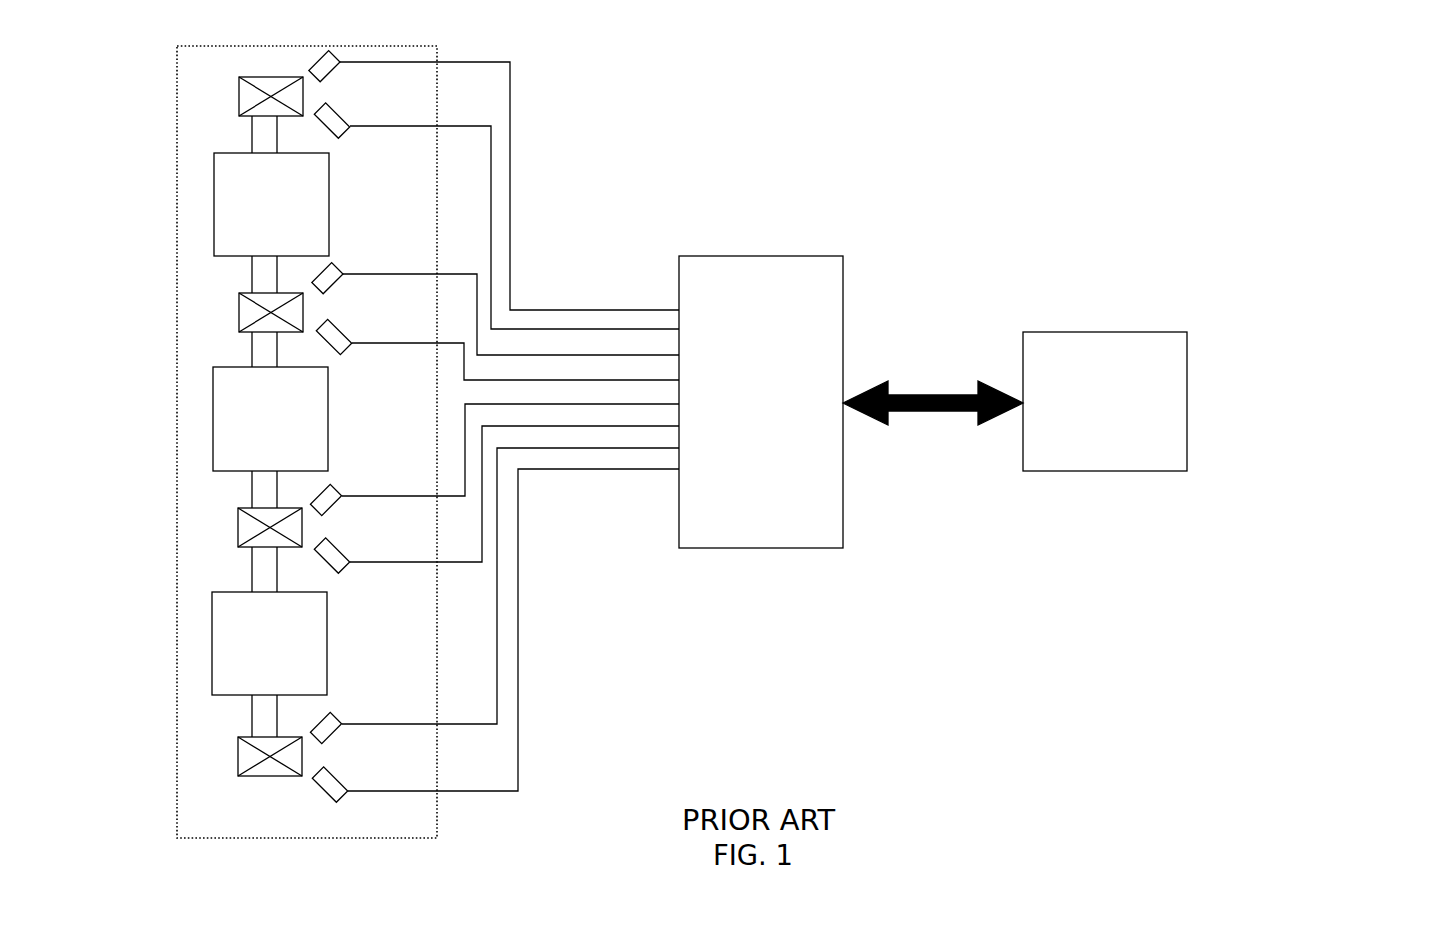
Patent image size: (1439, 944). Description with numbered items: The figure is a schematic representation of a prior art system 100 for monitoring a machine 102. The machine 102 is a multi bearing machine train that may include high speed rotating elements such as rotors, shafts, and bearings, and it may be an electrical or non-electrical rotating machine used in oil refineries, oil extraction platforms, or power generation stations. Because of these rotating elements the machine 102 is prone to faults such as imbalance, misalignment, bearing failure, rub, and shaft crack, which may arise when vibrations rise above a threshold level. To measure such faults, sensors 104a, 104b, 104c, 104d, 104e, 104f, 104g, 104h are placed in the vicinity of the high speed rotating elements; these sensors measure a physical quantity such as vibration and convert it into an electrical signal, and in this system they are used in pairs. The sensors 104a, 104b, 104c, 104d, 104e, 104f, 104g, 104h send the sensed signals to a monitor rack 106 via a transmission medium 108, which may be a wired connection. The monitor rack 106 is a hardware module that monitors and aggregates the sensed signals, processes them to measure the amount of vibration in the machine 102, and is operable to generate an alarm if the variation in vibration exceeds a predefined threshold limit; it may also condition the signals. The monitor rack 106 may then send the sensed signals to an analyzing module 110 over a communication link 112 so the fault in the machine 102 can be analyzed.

The prior art system 100 is at (1348, 107).
The machine 102 is at (177, 443).
The sensor 104a is at (331, 72).
The sensor 104b is at (334, 132).
The sensor 104c is at (334, 284).
The sensor 104d is at (336, 348).
The sensor 104e is at (333, 506).
The sensor 104f is at (334, 567).
The sensor 104g is at (333, 734).
The sensor 104h is at (332, 796).
The monitor rack 106 is at (760, 256).
The transmission medium 108 is at (519, 648).
The analyzing module 110 is at (1105, 332).
The communication link 112 is at (940, 395).